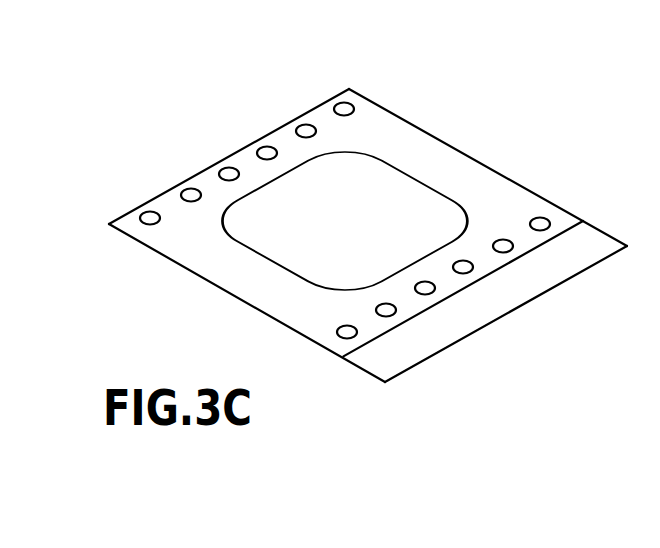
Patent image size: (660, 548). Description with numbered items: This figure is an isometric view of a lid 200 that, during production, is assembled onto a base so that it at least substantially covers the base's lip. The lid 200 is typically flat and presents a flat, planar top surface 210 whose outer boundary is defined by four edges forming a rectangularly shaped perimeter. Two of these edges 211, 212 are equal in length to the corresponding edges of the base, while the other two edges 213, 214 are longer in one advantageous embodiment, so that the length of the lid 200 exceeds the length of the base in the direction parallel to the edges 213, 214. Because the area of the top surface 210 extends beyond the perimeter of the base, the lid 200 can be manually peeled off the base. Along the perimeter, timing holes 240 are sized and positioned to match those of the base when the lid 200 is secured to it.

The lid 200 is at (557, 307).
The top surface 210 is at (432, 170).
The edge 211 is at (247, 143).
The edge 212 is at (448, 350).
The edge 213 is at (238, 299).
The edge 214 is at (518, 183).
The timing holes 240 is at (307, 122).